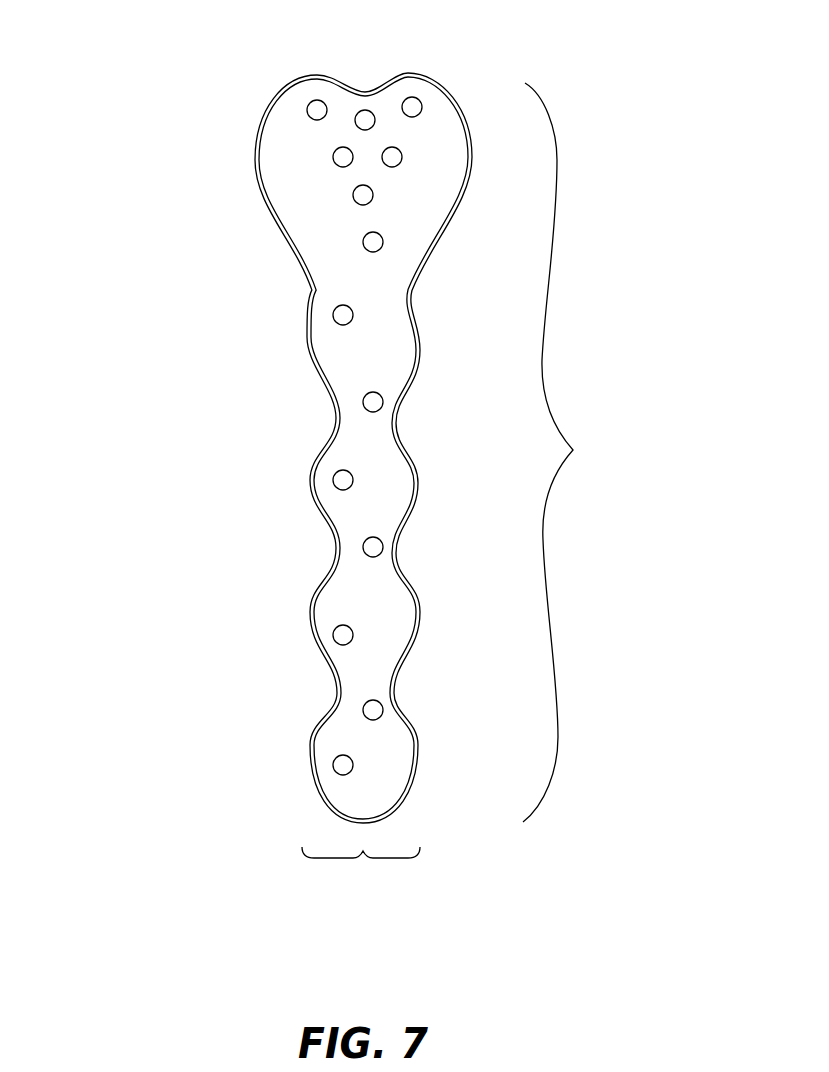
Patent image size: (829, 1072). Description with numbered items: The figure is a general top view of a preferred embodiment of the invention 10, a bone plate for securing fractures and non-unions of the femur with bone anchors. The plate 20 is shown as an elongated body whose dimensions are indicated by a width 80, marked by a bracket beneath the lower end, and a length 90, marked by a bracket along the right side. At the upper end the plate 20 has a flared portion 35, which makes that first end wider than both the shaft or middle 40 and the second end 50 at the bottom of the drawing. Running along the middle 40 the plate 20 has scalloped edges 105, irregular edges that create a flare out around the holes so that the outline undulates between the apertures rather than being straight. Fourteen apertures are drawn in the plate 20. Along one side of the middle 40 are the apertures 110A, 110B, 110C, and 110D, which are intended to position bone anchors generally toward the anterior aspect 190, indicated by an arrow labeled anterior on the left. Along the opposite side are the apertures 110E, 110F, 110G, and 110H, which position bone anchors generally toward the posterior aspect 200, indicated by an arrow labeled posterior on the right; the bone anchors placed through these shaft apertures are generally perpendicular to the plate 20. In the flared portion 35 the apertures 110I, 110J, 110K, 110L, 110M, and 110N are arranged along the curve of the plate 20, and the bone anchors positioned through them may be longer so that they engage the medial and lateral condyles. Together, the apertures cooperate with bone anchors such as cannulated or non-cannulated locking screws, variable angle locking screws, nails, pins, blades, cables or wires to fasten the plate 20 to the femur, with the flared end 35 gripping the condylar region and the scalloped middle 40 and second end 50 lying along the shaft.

The invention 10 is at (598, 148).
The plate 20 is at (433, 79).
The flared portion 35 is at (452, 96).
The shaft and or middle 40 is at (421, 350).
The second end 50 is at (394, 813).
The width 80 is at (361, 871).
The length 90 is at (564, 452).
The scalloped edges 105 is at (395, 423).
The aperture 110A is at (336, 310).
The aperture 110B is at (336, 475).
The aperture 110C is at (336, 630).
The aperture 110D is at (336, 760).
The aperture 110E is at (383, 241).
The aperture 110F is at (379, 398).
The aperture 110G is at (380, 544).
The aperture 110H is at (380, 707).
The aperture 110I is at (355, 190).
The aperture 110J is at (336, 152).
The aperture 110K is at (309, 106).
The aperture 110L is at (397, 164).
The aperture 110M is at (420, 112).
The aperture 110N is at (365, 110).
The anterior aspect 190 is at (238, 232).
The posterior aspect 200 is at (571, 343).